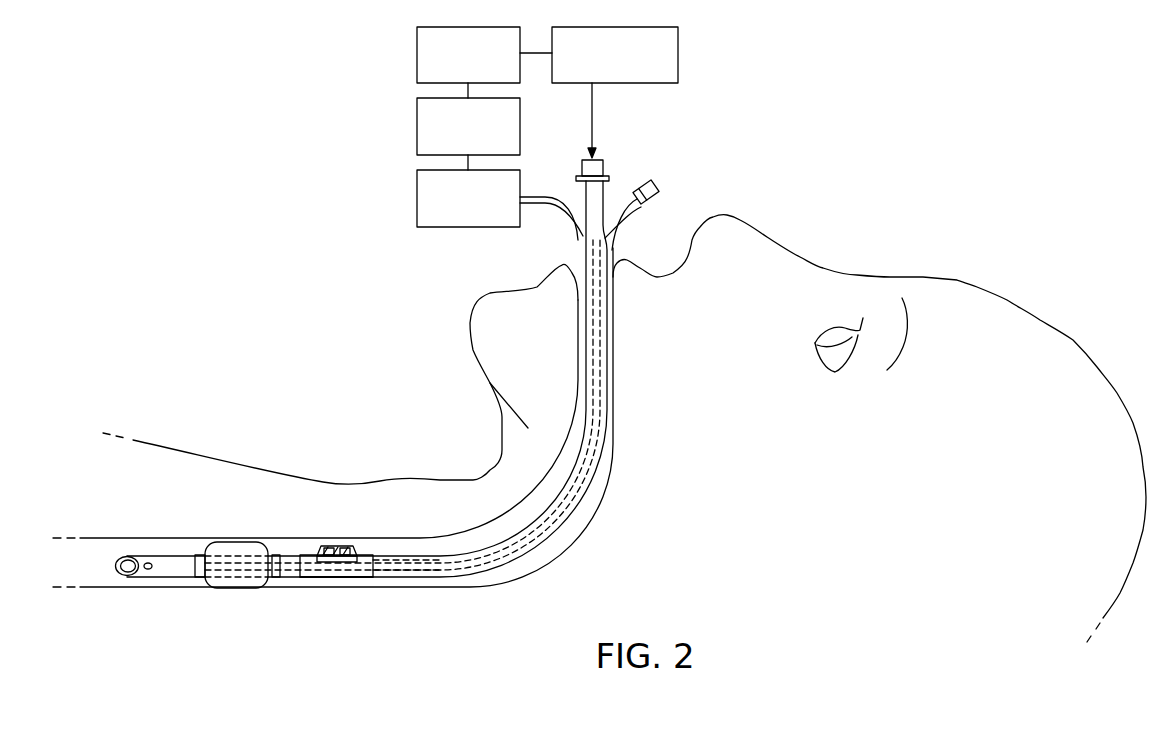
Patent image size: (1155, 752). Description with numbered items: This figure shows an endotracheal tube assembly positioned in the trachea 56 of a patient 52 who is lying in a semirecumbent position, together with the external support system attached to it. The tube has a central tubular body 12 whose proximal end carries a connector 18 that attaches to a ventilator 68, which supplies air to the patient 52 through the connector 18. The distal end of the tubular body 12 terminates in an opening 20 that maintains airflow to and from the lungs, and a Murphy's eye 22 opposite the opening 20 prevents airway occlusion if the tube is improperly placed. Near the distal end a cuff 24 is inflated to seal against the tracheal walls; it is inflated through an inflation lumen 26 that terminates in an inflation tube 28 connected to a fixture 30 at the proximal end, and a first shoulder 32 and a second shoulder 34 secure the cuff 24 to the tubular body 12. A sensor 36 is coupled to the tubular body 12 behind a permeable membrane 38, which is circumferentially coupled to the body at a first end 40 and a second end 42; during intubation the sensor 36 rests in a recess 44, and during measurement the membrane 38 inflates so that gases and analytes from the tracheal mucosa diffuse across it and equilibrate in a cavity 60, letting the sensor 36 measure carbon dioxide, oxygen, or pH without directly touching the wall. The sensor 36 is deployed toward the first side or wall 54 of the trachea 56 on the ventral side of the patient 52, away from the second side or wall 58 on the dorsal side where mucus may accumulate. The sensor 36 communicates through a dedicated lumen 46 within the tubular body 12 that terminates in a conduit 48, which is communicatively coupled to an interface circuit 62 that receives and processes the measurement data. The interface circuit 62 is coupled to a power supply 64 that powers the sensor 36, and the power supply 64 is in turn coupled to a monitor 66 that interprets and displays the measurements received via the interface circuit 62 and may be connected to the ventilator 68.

The tubular body 12 is at (541, 520).
The connector 18 is at (605, 176).
The opening 20 is at (126, 574).
The Murphy's eye 22 is at (149, 572).
The cuff 24 is at (213, 548).
The inflation lumen 26 is at (606, 268).
The inflation tube 28 is at (619, 208).
The fixture 30 is at (653, 194).
The first shoulder 32 is at (200, 574).
The second shoulder 34 is at (277, 578).
The sensor 36 is at (330, 545).
The permeable membrane 38 is at (360, 547).
The first end 40 is at (308, 576).
The second end 42 is at (364, 583).
The recess 44 is at (341, 563).
The lumen 46 is at (388, 553).
The conduit 48 is at (555, 212).
The patient 52 is at (970, 280).
The first side or wall of the trachea 54 is at (342, 574).
The trachea 56 is at (98, 565).
The second side or wall of the trachea 58 is at (313, 592).
The cavity 60 is at (305, 546).
The interface circuit 62 is at (417, 201).
The power supply 64 is at (417, 128).
The monitor 66 is at (417, 57).
The ventilator 68 is at (678, 53).